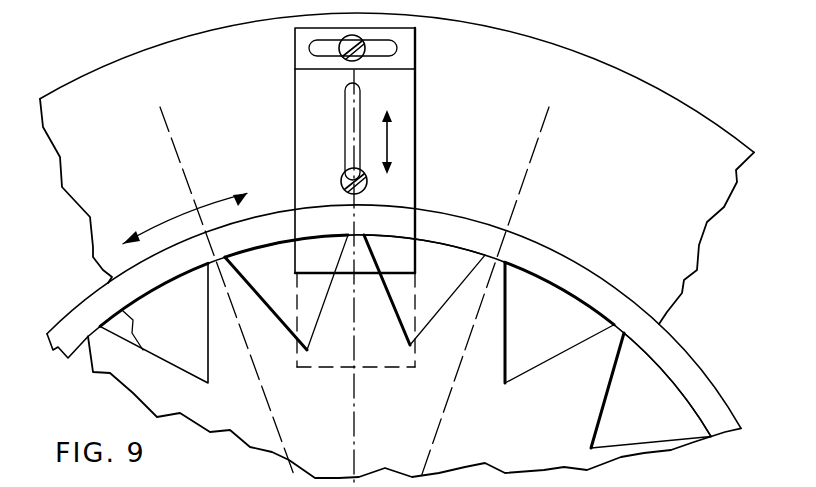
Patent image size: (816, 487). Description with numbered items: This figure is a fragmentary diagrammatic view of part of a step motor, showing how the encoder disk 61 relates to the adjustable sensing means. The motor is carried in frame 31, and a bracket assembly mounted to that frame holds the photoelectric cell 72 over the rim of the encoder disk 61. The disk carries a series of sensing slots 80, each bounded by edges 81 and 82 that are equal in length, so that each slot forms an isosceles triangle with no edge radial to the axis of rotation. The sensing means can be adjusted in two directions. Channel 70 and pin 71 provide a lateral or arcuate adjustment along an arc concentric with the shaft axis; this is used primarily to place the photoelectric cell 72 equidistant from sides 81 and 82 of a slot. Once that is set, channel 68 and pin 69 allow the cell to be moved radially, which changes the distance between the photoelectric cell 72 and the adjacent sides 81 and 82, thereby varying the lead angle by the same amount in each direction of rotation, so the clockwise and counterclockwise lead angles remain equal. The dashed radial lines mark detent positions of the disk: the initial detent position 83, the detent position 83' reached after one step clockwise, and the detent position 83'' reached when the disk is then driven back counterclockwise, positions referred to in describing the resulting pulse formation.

The frame 31 is at (133, 68).
The encoder disk 61 is at (602, 285).
The initial detent position 83 is at (399, 278).
The detent position 83' is at (227, 291).
The detent position 83'' is at (484, 293).
The sensing slots 80 is at (440, 255).
The edge 81 is at (390, 258).
The edge 82 is at (344, 255).
The photoelectric cell 72 is at (348, 280).
The channel 70 is at (398, 48).
The pin 71 is at (343, 40).
The channel 68 is at (345, 94).
The pin 69 is at (341, 176).